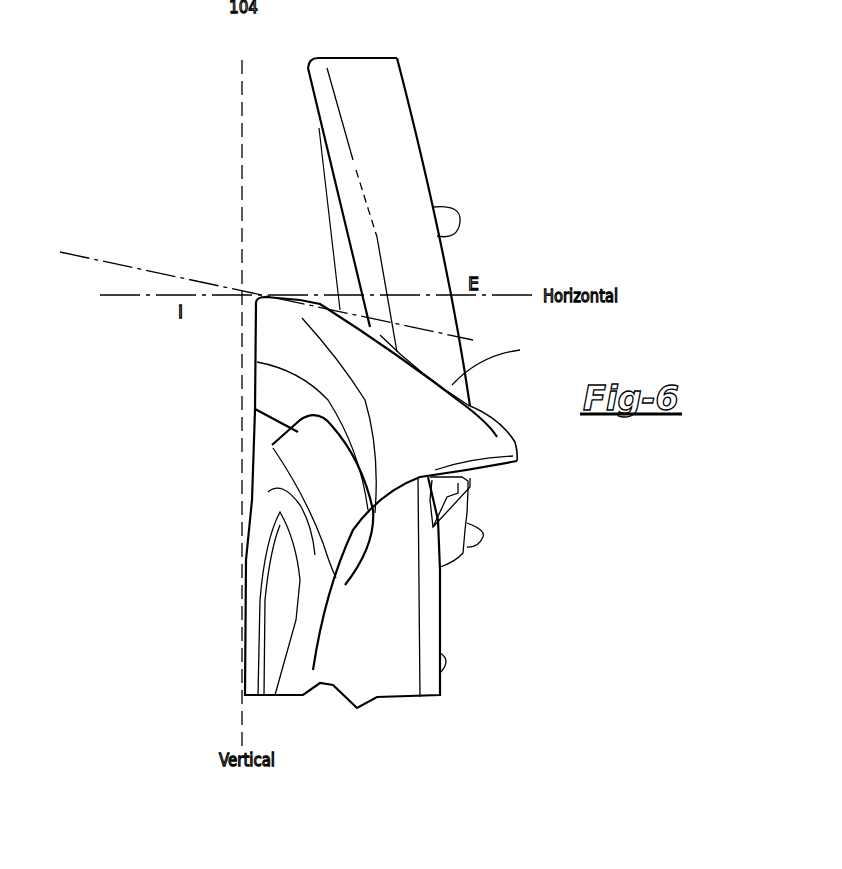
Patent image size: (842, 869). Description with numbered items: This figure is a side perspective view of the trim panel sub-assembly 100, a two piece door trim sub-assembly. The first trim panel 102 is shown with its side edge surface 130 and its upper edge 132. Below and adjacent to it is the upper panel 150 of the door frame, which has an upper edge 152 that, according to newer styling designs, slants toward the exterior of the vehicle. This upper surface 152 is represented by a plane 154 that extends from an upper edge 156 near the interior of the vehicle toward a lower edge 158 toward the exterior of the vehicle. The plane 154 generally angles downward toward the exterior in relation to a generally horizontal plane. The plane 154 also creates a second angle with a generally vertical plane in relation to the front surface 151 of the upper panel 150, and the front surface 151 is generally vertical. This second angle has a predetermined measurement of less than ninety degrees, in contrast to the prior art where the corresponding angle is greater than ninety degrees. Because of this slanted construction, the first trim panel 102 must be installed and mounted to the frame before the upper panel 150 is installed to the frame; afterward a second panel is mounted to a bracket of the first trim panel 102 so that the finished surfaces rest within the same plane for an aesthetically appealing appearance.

The trim panel sub-assembly 100 is at (497, 233).
The first trim panel 102 is at (401, 203).
The side edge surface 130 is at (404, 169).
The upper edge 132 is at (352, 57).
The upper panel 150 is at (320, 505).
The front surface 151 is at (299, 570).
The upper edge 152 is at (386, 437).
The plane 154 is at (187, 279).
The upper edge 156 is at (282, 299).
The lower edge 158 is at (502, 362).